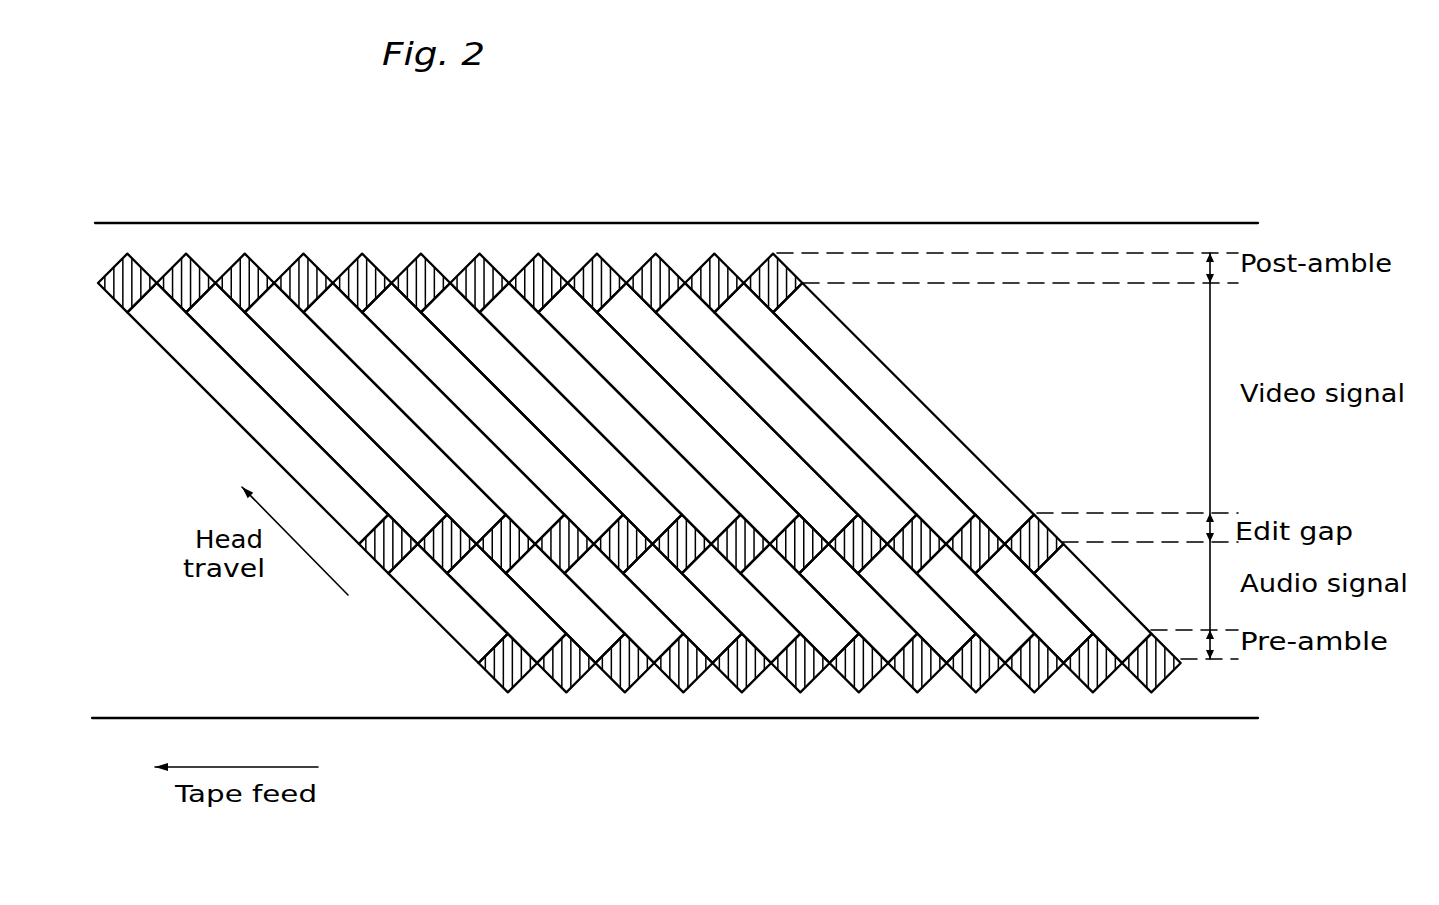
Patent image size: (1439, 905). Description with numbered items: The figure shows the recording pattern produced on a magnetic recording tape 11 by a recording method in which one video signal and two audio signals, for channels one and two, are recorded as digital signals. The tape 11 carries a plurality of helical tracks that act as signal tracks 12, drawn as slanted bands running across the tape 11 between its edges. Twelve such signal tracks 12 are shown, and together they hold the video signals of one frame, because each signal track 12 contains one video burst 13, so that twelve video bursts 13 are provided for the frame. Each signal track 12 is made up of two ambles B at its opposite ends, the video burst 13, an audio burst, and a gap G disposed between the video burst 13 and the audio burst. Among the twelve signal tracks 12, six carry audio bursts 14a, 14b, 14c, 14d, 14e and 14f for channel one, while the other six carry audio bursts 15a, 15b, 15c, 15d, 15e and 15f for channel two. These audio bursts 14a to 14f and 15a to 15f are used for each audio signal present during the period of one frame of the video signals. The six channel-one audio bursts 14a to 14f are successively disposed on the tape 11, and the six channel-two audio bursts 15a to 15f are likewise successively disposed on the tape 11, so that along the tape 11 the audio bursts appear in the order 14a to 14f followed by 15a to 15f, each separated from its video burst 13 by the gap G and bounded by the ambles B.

The magnetic recording tape 11 is at (383, 702).
The signal track 12 is at (762, 237).
The video burst 13 is at (913, 405).
The audio burst for channel one 14a is at (468, 637).
The audio burst for channel one 14b is at (527, 637).
The audio burst for channel one 14c is at (586, 637).
The audio burst for channel one 14d is at (645, 637).
The audio burst for channel one 14e is at (703, 637).
The audio burst for channel one 14f is at (762, 637).
The audio burst for channel two 15a is at (821, 637).
The audio burst for channel two 15b is at (879, 637).
The audio burst for channel two 15c is at (938, 637).
The audio burst for channel two 15d is at (997, 637).
The audio burst for channel two 15e is at (1055, 637).
The audio burst for channel two 15f is at (1114, 637).
The amble B is at (122, 290).
The gap G is at (383, 552).